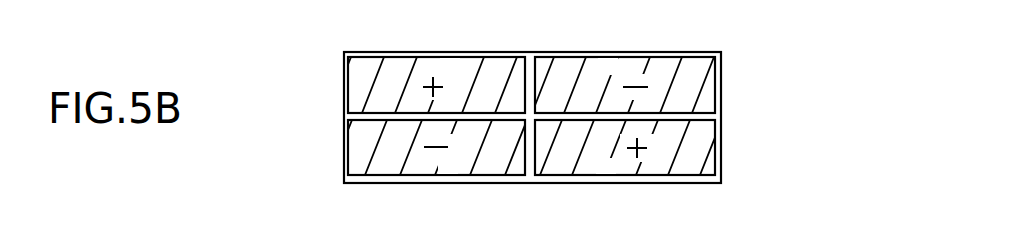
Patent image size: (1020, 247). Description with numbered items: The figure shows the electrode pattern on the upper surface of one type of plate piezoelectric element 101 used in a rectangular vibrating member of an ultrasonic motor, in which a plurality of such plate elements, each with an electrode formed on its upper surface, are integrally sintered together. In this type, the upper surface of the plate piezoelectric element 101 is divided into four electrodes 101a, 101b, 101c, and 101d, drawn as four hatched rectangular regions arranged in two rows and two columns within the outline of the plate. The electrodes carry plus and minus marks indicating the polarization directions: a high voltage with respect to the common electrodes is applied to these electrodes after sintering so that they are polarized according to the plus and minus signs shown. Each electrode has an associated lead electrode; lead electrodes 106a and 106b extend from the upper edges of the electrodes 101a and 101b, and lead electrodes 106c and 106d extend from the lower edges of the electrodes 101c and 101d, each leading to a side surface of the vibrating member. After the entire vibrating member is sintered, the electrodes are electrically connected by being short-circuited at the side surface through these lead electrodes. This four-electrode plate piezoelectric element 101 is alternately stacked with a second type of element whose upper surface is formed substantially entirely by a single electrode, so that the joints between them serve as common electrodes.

The plate piezoelectric element 101 is at (738, 120).
The electrode 101a is at (450, 30).
The electrode 101b is at (705, 78).
The electrode 101c is at (355, 140).
The electrode 101d is at (705, 164).
The lead electrode 106a is at (450, 57).
The lead electrode 106b is at (607, 57).
The lead electrode 106c is at (448, 175).
The lead electrode 106d is at (606, 175).